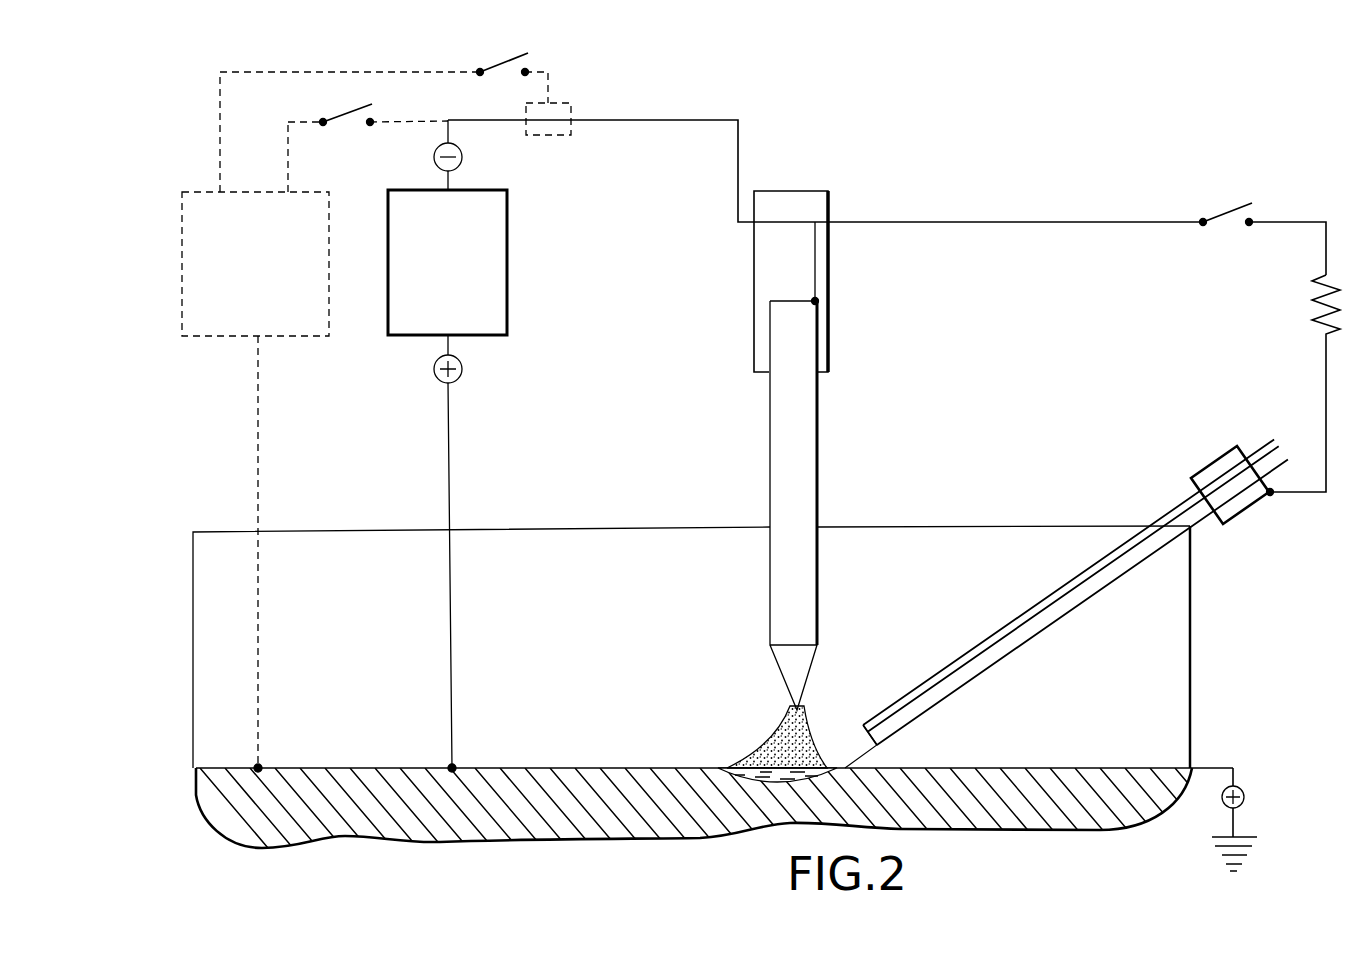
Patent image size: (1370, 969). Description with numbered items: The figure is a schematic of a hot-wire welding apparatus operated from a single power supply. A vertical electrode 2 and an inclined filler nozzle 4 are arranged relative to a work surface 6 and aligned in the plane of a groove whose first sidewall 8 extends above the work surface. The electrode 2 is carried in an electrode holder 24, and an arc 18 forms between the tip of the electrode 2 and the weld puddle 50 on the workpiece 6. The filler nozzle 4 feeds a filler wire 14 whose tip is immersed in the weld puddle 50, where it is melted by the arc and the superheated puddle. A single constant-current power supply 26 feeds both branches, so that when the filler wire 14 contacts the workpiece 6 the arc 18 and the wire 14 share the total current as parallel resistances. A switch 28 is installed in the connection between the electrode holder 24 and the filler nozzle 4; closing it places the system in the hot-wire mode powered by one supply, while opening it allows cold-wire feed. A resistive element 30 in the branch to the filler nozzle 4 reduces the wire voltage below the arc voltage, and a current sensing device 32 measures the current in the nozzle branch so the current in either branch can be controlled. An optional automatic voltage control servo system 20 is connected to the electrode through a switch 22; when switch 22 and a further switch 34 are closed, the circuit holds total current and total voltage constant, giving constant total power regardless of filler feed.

The vertical electrode 2 is at (770, 577).
The inclined filler nozzle 4 is at (1062, 618).
The work surface 6 is at (1050, 766).
The first sidewall 8 is at (579, 607).
The filler wire 14 is at (847, 752).
The arc 18 is at (762, 737).
The automatic voltage control servo system 20 is at (330, 240).
The switch 22 is at (342, 112).
The electrode holder 24 is at (828, 206).
The single constant-current power supply 26 is at (490, 190).
The switch 28 is at (1225, 216).
The resistive element 30 is at (1310, 290).
The current sensing device 32 is at (562, 102).
The switch 34 is at (493, 68).
The weld puddle 50 is at (763, 782).